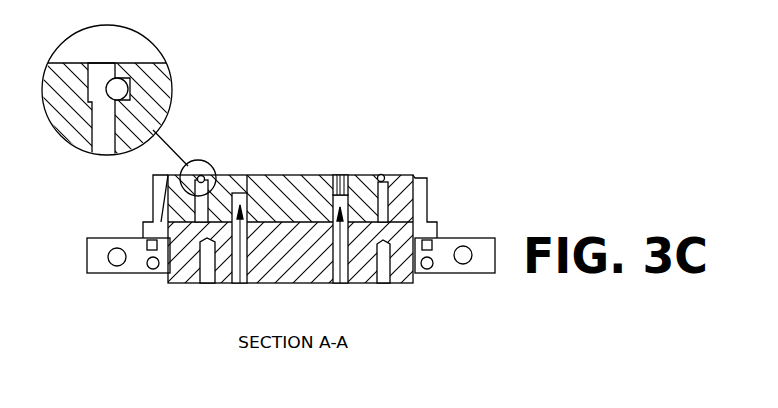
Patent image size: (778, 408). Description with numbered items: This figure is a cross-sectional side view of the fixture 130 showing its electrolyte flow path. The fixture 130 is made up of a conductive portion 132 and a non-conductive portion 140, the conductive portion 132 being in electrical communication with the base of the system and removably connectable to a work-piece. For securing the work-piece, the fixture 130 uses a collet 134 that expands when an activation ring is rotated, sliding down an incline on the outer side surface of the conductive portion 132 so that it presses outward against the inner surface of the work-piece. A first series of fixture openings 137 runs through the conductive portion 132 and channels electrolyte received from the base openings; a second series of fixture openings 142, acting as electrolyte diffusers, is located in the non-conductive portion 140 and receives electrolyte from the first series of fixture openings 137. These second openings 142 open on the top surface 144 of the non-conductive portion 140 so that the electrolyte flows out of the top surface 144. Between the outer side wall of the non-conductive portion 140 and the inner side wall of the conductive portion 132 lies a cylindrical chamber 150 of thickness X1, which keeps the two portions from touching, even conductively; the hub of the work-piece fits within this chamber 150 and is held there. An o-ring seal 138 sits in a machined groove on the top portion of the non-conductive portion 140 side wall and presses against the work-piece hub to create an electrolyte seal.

The fixture 130 is at (515, 175).
The conductive portion 132 is at (298, 266).
The collet 134 is at (427, 173).
The first series of fixture openings 137 is at (240, 285).
The o-ring seal 138 is at (205, 170).
The non-conductive portion 140 is at (298, 210).
The second series of fixture openings 142 is at (245, 172).
The top surface 144 is at (297, 172).
The cylindrical chamber 150 is at (200, 170).
The thickness X1 is at (103, 65).